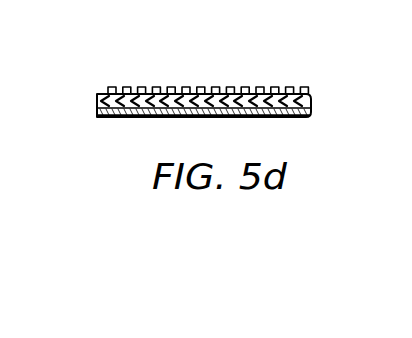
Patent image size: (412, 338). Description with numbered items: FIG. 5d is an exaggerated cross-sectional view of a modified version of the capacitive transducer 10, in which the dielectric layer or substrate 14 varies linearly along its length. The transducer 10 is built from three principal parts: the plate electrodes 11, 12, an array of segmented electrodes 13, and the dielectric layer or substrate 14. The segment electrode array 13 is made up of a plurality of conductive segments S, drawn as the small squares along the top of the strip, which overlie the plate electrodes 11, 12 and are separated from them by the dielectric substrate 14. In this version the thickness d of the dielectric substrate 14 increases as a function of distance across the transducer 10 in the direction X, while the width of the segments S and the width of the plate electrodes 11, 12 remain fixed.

The capacitive transducer 10 is at (309, 73).
The array of segmented electrodes 13 is at (303, 67).
The conductive segment S is at (170, 91).
The dielectric layer or substrate 14 is at (97, 101).
The plate electrode 11 is at (133, 115).
The plate electrode 12 is at (203, 112).
The direction of movement X is at (298, 138).
The thickness d is at (341, 70).